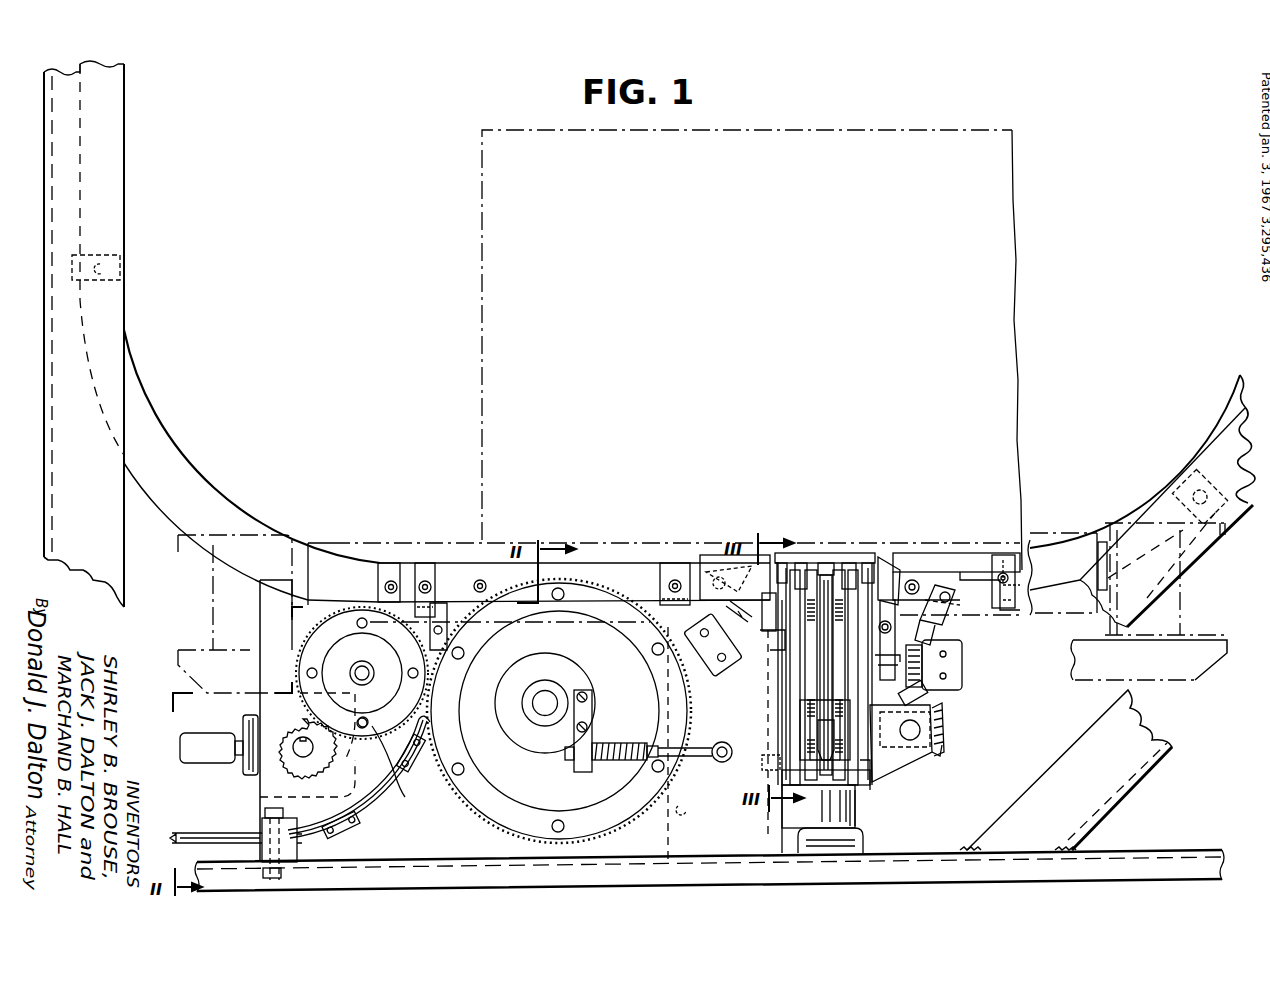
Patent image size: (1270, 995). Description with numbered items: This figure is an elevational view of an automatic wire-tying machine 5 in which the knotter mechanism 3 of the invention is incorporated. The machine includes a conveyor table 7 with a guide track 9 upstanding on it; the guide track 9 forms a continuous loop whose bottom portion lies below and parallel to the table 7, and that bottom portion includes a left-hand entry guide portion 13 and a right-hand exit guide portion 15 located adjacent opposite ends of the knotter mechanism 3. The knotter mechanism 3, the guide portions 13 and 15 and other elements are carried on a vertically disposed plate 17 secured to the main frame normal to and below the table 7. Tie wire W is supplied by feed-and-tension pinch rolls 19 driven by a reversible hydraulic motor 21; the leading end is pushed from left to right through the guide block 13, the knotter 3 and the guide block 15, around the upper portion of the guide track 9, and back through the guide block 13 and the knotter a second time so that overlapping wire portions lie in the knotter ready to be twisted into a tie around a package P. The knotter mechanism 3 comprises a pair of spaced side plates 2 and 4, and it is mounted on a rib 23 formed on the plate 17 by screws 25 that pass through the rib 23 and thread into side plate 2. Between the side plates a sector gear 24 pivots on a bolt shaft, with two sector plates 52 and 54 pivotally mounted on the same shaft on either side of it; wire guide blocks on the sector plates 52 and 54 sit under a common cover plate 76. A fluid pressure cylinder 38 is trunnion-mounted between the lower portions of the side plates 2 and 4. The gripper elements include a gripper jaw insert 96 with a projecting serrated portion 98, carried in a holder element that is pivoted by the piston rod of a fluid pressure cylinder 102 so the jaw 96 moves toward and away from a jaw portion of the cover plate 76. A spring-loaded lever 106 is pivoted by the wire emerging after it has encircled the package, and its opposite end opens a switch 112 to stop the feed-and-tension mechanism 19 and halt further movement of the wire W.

The package P is at (482, 237).
The guide track 9 is at (160, 458).
The conveyor table 7 is at (418, 547).
The left-hand entry guide portion 13 is at (639, 557).
The automatic wire-tying machine 5 is at (256, 606).
The side plate 2 is at (778, 648).
The reversible hydraulic motor 21 is at (256, 782).
The vertically disposed plate 17 is at (676, 768).
The knotter mechanism 3 is at (838, 553).
The cover plate 76 is at (800, 557).
The screws 25 is at (775, 690).
The sector plate 52 is at (796, 700).
The sector gear 24 is at (790, 800).
The rib 23 is at (782, 815).
The fluid pressure cylinder 38 is at (856, 805).
The serrated portion 98 is at (886, 555).
The right-hand exit guide portion 15 is at (918, 553).
The gripper jaw insert 96 is at (890, 612).
The switch 112 is at (963, 668).
The spring-loaded lever 106 is at (904, 680).
The side plate 4 is at (862, 714).
The sector plate 54 is at (858, 746).
The fluid pressure cylinder 102 is at (943, 716).
The feed-and-tension pinch rolls 19 is at (434, 778).
The tie wire W is at (172, 836).